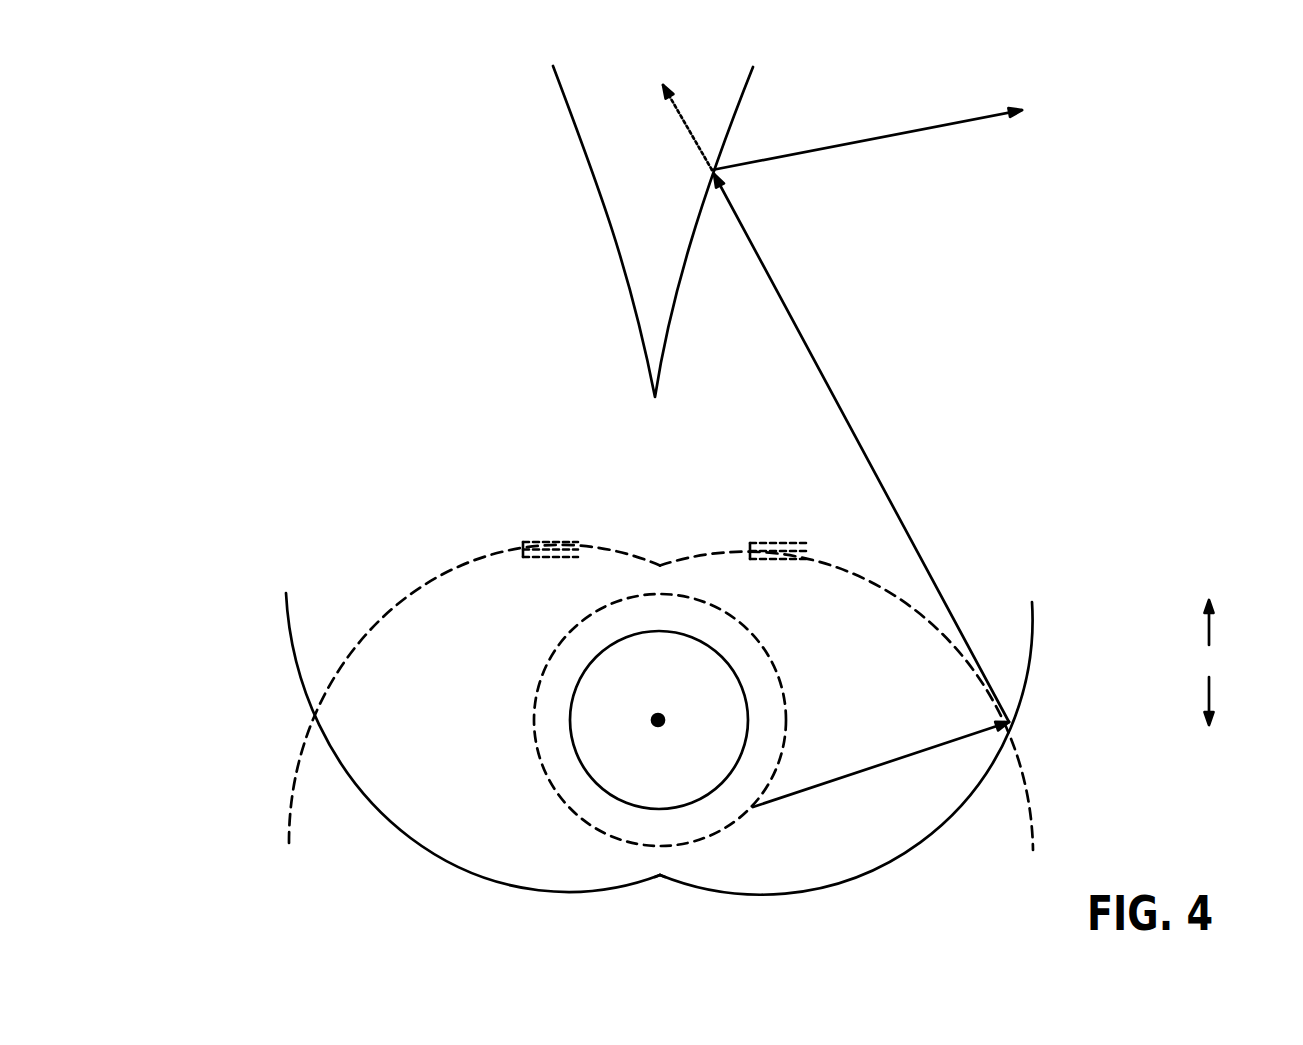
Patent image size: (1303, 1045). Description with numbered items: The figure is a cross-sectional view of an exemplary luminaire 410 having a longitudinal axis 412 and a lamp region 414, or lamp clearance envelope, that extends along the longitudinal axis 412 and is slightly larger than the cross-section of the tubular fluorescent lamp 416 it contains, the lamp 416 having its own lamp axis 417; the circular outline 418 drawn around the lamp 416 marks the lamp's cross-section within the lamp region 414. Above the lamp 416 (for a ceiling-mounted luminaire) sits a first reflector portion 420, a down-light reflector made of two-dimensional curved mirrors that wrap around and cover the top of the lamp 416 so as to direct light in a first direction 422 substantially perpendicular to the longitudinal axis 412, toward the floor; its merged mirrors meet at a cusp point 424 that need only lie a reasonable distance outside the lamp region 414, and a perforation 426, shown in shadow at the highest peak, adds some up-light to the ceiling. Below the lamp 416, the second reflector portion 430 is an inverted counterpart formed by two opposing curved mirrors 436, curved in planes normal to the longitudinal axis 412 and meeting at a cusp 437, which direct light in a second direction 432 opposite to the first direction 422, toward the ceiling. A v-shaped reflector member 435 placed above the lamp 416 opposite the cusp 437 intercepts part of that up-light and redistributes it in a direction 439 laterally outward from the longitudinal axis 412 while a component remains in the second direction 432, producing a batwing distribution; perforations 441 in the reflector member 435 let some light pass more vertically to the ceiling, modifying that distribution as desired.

The luminaire 410 is at (263, 255).
The longitudinal axis 412 is at (664, 718).
The lamp region 414 is at (778, 680).
The lamp 416 is at (635, 688).
The lamp axis 417 is at (661, 727).
The inner circle 418 is at (572, 742).
The first reflector portion 420 is at (398, 592).
The first direction 422 is at (1212, 692).
The cusp point 424 is at (661, 557).
The perforation 426 is at (545, 543).
The second reflector portion 430 is at (400, 852).
The second direction 432 is at (1212, 622).
The reflector member 435 is at (620, 249).
The curved mirrors 436 is at (289, 642).
The cusp 437 is at (662, 878).
The direction 439 is at (968, 122).
The perforations 441 is at (720, 164).